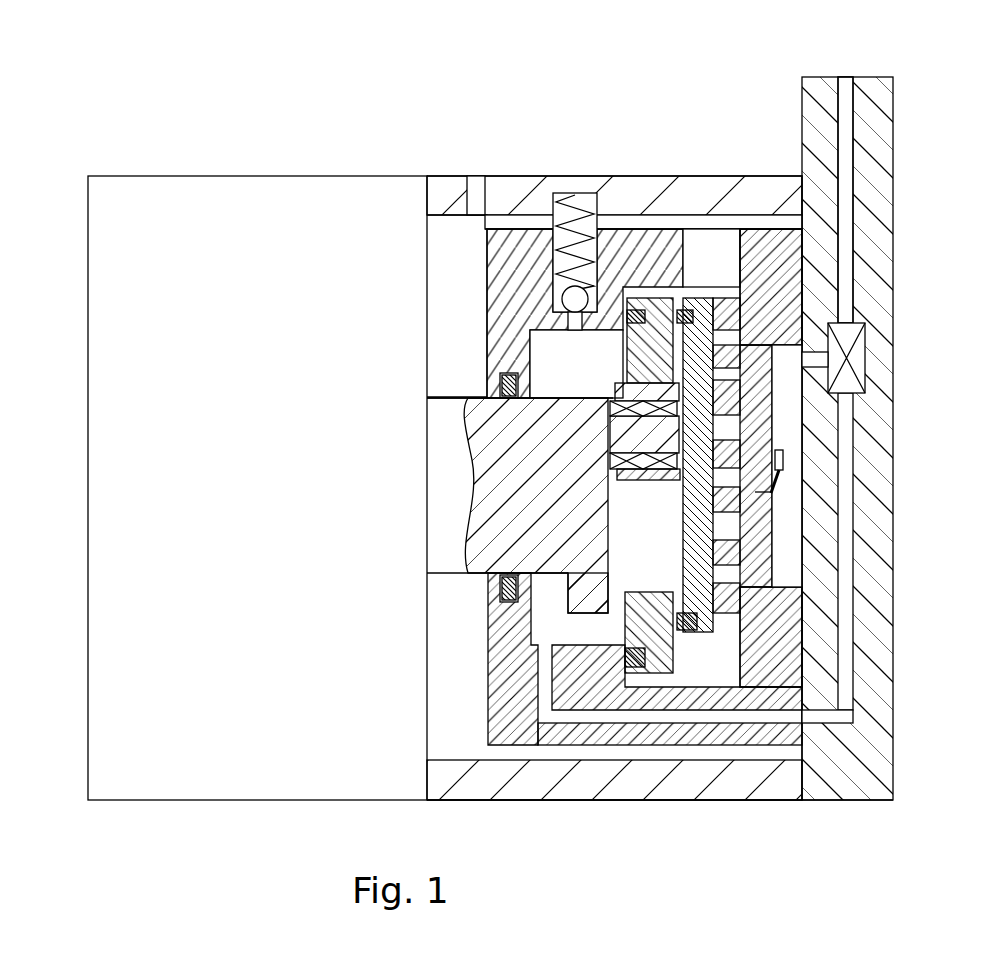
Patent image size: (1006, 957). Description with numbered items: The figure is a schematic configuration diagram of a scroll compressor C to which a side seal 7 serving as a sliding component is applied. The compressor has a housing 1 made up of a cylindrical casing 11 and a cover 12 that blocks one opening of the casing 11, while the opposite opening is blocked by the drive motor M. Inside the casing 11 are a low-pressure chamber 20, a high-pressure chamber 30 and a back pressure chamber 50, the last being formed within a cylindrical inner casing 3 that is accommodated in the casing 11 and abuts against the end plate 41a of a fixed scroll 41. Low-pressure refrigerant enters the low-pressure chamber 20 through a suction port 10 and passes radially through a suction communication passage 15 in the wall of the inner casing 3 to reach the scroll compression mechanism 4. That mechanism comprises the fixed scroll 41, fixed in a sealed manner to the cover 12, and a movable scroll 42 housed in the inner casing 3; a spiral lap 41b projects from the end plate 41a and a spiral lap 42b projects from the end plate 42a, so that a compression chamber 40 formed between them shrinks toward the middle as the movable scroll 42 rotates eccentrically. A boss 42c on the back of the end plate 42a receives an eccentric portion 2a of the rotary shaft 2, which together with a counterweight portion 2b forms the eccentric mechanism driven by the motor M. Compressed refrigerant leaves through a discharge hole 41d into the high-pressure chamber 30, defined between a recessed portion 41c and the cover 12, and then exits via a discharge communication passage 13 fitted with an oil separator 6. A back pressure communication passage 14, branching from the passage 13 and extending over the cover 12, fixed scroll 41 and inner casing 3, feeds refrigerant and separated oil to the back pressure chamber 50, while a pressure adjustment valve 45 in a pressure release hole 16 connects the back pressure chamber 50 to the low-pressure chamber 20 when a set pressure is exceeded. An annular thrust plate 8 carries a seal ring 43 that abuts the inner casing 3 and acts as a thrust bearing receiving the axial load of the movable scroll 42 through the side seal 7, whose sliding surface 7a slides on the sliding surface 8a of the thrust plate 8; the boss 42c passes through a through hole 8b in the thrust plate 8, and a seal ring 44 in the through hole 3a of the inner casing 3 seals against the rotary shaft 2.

The scroll compressor C is at (230, 158).
The drive motor M is at (255, 772).
The housing 1 is at (735, 883).
The rotary shaft 2 is at (444, 584).
The eccentric portion 2a is at (655, 438).
The counterweight portion 2b is at (590, 595).
The inner casing 3 is at (530, 216).
The through hole 3a is at (495, 410).
The scroll compression mechanism 4 is at (787, 80).
The oil separator 6 is at (857, 353).
The side seal 7 is at (692, 300).
The sliding surface 7a is at (690, 628).
The thrust plate 8 is at (652, 298).
The sliding surface 8a is at (650, 618).
The through hole 8b is at (640, 662).
The suction port 10 is at (481, 195).
The casing 11 is at (770, 765).
The cover 12 is at (845, 765).
The discharge communication passage 13 is at (848, 92).
The back pressure communication passage 14 is at (772, 738).
The suction communication passage 15 is at (705, 270).
The pressure release hole 16 is at (572, 325).
The low-pressure chamber 20 is at (457, 247).
The high-pressure chamber 30 is at (787, 568).
The compression chamber 40 is at (785, 460).
The fixed scroll 41 is at (778, 218).
The end plate 41a is at (772, 248).
The spiral lap 41b is at (762, 433).
The recessed portion 41c is at (805, 358).
The discharge hole 41d is at (760, 492).
The movable scroll 42 is at (725, 298).
The end plate 42a is at (755, 330).
The spiral lap 42b is at (758, 505).
The boss 42c is at (640, 485).
The seal ring 43 is at (512, 594).
The seal ring 44 is at (500, 385).
The pressure adjustment valve 45 is at (552, 217).
The back pressure chamber 50 is at (550, 365).